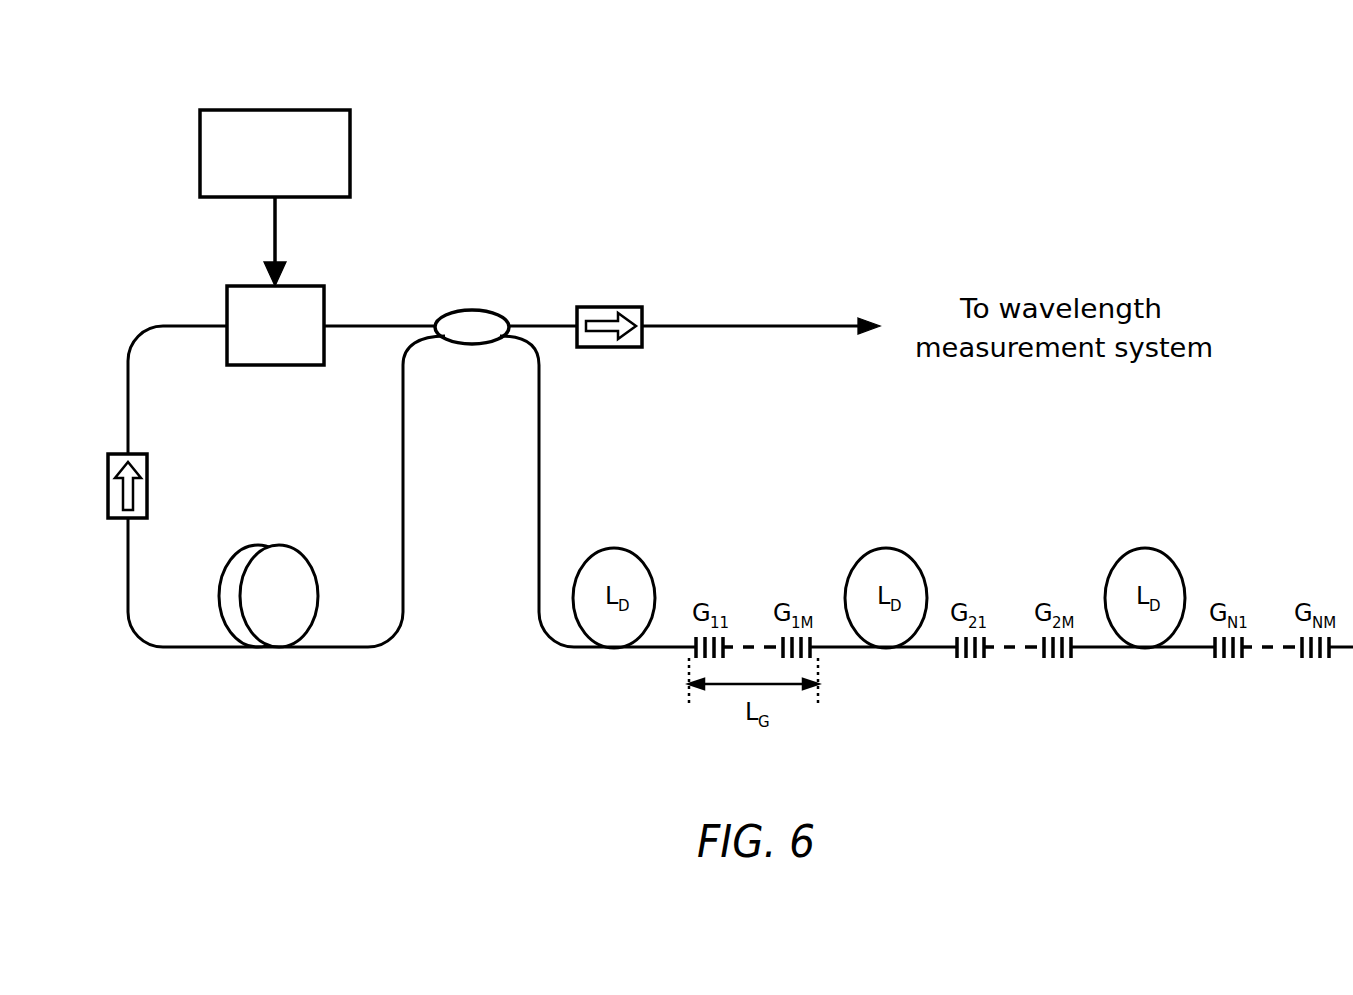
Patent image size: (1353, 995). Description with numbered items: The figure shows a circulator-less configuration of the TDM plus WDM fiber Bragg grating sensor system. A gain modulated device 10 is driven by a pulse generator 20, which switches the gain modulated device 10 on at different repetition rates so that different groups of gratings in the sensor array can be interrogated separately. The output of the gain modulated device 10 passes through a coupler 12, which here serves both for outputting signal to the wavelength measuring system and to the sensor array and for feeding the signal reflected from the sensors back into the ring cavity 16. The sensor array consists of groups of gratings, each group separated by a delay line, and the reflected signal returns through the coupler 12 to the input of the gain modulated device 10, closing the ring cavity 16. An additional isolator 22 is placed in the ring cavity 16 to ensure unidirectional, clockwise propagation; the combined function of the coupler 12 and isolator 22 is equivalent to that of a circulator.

The pulse generator 20 is at (282, 110).
The gain modulated device 10 is at (244, 286).
The coupler 12 is at (442, 318).
The ring cavity 16 is at (262, 460).
The isolator 22 is at (643, 316).